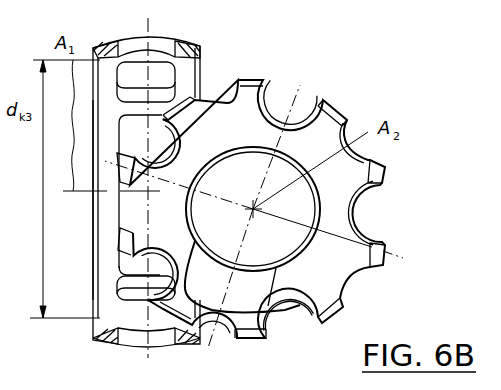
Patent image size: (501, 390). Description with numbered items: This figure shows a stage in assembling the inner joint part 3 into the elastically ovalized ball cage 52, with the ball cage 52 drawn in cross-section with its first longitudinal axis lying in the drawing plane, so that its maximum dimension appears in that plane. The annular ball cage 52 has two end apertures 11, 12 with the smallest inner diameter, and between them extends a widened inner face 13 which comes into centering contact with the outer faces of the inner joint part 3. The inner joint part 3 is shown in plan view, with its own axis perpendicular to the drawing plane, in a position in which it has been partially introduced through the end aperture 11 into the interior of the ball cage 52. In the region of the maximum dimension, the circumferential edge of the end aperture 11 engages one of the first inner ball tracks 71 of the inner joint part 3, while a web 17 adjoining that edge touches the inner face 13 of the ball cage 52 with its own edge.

The inner joint part 3 is at (330, 125).
The end aperture 11 is at (208, 73).
The ball cage 52 is at (193, 43).
The end aperture 12 is at (90, 294).
The inner face 13 is at (133, 318).
The web 17 is at (172, 322).
The first inner ball track 71 is at (217, 324).